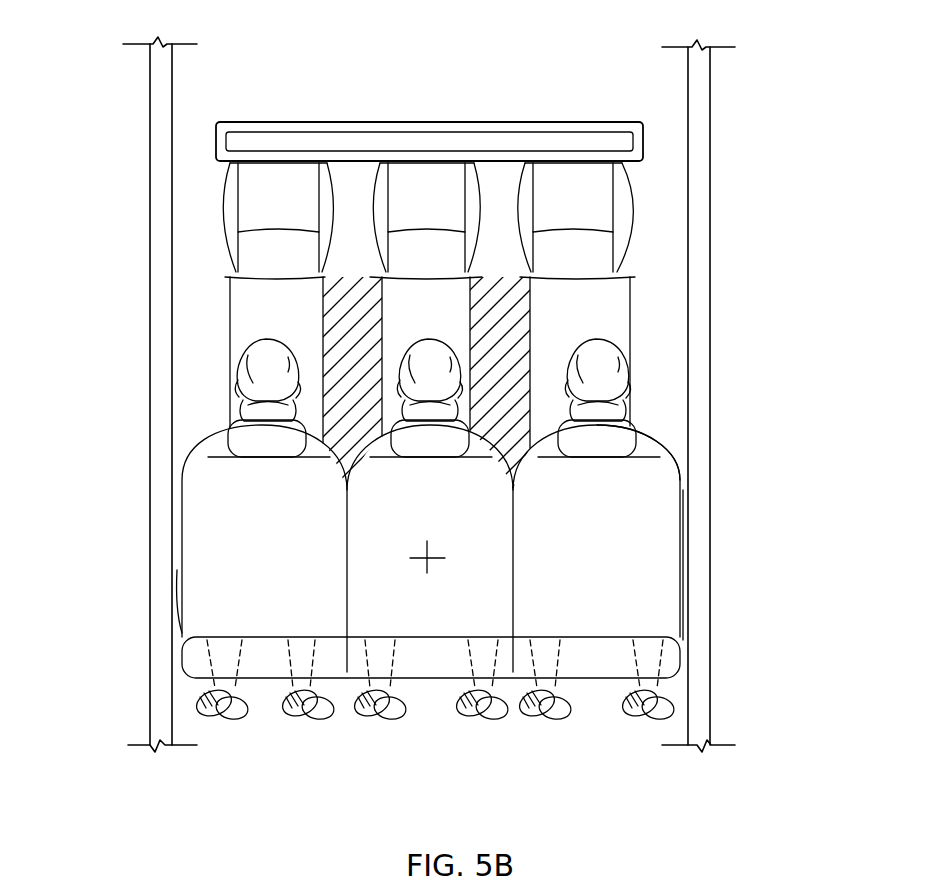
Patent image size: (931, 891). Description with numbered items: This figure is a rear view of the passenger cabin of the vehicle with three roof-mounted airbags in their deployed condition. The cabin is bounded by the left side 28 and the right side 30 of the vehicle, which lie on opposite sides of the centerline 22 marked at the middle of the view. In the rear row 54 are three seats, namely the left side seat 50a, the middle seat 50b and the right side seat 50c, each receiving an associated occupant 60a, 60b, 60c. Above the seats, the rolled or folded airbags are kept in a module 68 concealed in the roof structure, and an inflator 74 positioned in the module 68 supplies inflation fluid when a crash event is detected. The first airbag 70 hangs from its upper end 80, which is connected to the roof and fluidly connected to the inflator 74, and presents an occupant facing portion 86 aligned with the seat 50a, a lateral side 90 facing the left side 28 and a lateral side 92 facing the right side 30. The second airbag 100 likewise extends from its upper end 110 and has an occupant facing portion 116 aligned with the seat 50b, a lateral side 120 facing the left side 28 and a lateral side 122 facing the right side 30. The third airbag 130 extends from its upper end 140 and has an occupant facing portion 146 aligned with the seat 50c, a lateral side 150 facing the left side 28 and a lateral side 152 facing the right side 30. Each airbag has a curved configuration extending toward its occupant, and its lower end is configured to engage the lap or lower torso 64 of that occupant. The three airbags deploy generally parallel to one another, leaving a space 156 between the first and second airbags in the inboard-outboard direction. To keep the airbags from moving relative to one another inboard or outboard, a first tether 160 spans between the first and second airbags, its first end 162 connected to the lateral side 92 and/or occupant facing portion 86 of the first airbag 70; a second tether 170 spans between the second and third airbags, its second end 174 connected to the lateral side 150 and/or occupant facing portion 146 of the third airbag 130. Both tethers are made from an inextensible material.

The centerline 22 is at (417, 560).
The left side 28 is at (122, 527).
The right side 30 is at (745, 571).
The left side seat 50a is at (286, 594).
The middle seat 50b is at (453, 630).
The right side seat 50c is at (619, 597).
The rear row 54 is at (170, 680).
The occupant 60a is at (208, 448).
The occupant 60b is at (377, 450).
The occupant 60c is at (639, 527).
The lap or lower torso 64 is at (210, 662).
The module 68 is at (432, 108).
The first airbag 70 is at (216, 155).
The inflator 74 is at (593, 130).
The upper end 80 is at (323, 283).
The occupant facing portion 86 is at (233, 387).
The lateral side 90 is at (230, 275).
The lateral side 92 is at (352, 182).
The second airbag 100 is at (477, 178).
The upper end 110 is at (392, 151).
The occupant facing portion 116 is at (411, 326).
The lateral side 120 is at (372, 235).
The lateral side 122 is at (472, 275).
The third airbag 130 is at (656, 306).
The upper end 140 is at (647, 198).
The occupant facing portion 146 is at (583, 333).
The lateral side 150 is at (528, 270).
The lateral side 152 is at (627, 212).
The space 156 is at (365, 285).
The first tether 160 is at (355, 423).
The first end 162 is at (231, 377).
The second tether 170 is at (500, 415).
The second end 174 is at (540, 337).